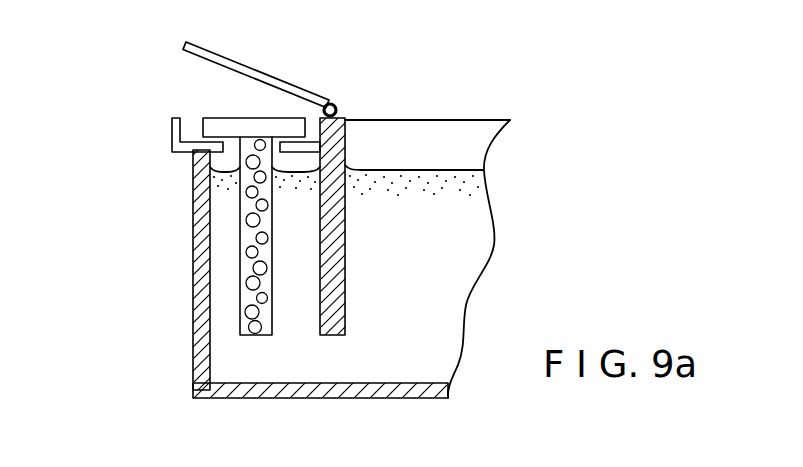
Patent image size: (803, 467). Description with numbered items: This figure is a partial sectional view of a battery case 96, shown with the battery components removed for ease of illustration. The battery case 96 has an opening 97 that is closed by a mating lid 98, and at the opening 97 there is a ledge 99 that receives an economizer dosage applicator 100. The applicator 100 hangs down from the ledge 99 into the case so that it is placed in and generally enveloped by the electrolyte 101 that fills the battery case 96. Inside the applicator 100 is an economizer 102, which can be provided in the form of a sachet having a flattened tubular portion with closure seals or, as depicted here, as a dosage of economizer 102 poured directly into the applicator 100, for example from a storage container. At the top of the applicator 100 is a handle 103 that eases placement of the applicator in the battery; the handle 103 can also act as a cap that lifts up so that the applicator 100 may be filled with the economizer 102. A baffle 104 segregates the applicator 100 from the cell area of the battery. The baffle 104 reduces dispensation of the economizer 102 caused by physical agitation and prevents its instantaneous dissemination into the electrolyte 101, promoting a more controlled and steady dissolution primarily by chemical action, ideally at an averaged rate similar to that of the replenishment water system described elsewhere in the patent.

The battery case 96 is at (174, 378).
The opening 97 is at (172, 100).
The mating lid 98 is at (292, 92).
The ledge 99 is at (196, 190).
The economizer dosage applicator 100 is at (240, 212).
The electrolyte 101 is at (460, 222).
The economizer 102 is at (240, 268).
The handle 103 is at (220, 118).
The baffle 104 is at (347, 148).